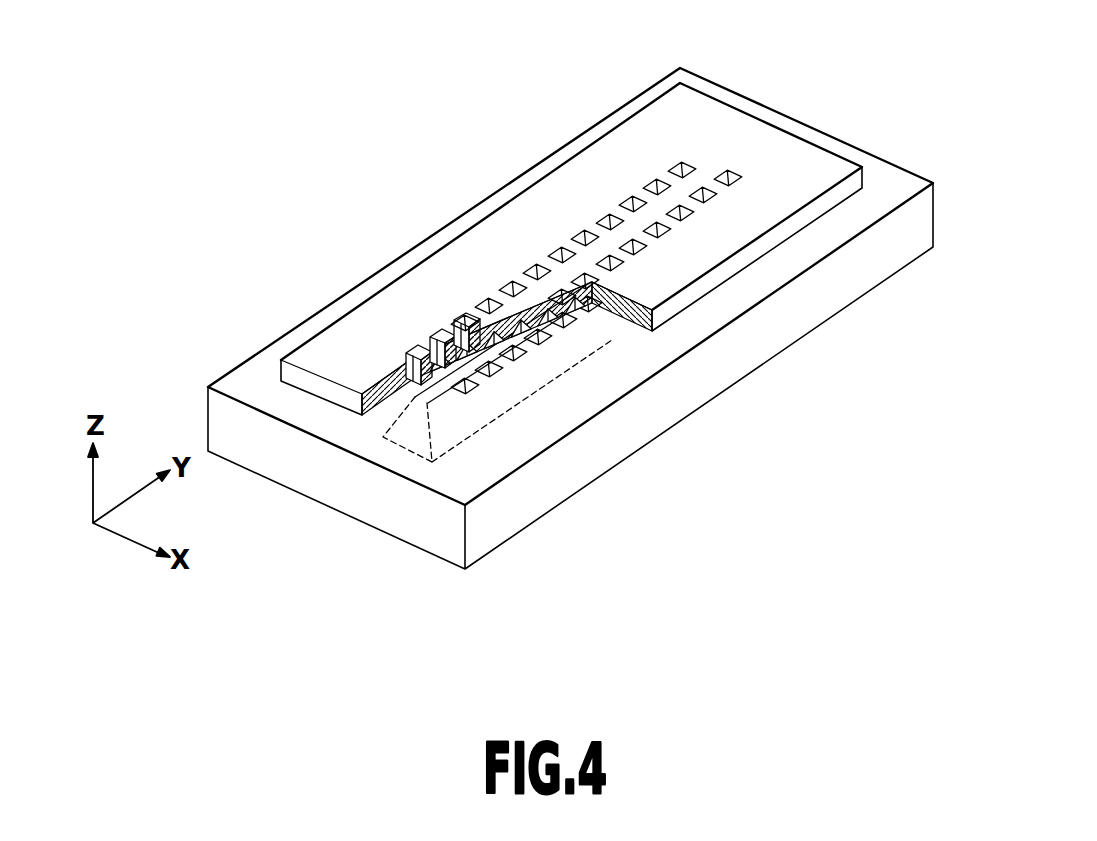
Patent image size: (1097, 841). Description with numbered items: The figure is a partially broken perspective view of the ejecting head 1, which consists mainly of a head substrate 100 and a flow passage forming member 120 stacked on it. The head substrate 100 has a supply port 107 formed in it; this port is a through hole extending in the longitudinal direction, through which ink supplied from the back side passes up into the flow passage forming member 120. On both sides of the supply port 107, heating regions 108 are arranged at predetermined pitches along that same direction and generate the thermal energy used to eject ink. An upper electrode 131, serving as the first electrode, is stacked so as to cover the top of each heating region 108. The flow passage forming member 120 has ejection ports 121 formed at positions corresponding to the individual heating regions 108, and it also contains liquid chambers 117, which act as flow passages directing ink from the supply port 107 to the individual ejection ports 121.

The ejecting head 1 is at (570, 309).
The head substrate 100 is at (758, 352).
The flow passage forming member 120 is at (571, 276).
The ejection ports 121 is at (585, 240).
The liquid chamber 117 is at (502, 323).
The heating regions 108 is at (557, 449).
The upper electrode 131 is at (470, 388).
The supply port 107 is at (415, 432).